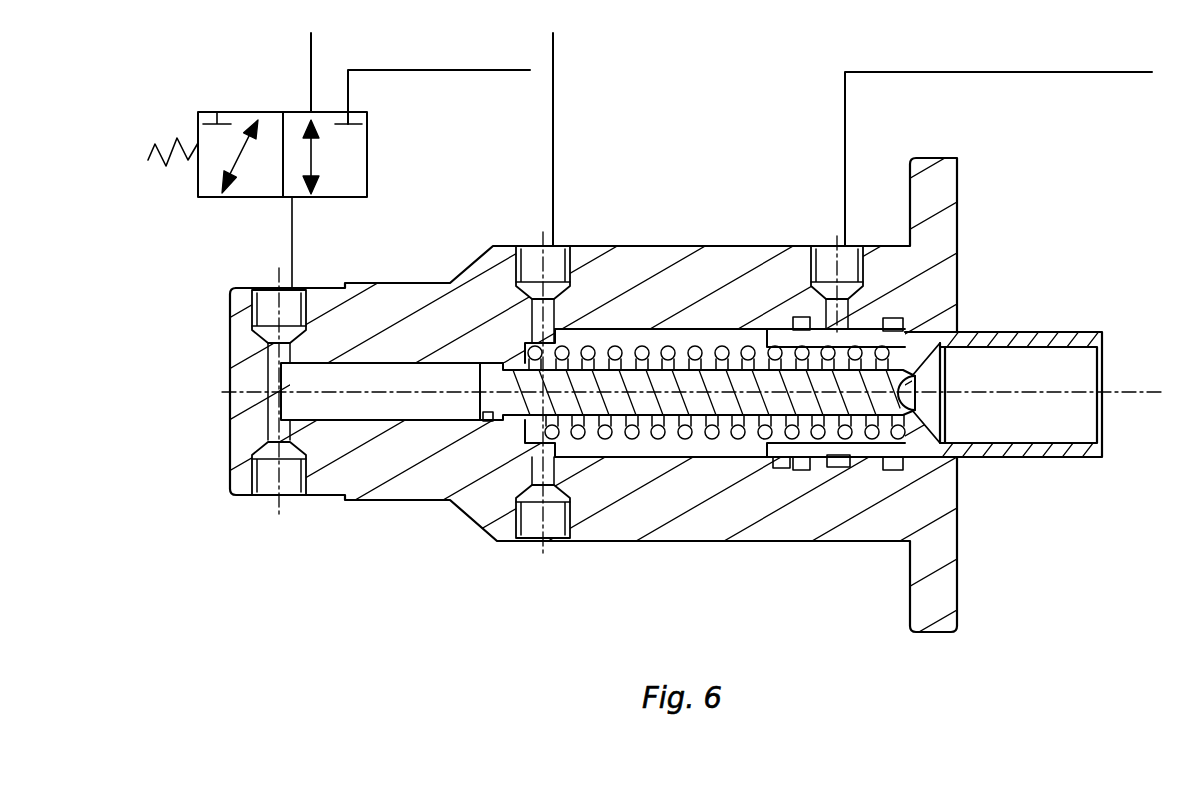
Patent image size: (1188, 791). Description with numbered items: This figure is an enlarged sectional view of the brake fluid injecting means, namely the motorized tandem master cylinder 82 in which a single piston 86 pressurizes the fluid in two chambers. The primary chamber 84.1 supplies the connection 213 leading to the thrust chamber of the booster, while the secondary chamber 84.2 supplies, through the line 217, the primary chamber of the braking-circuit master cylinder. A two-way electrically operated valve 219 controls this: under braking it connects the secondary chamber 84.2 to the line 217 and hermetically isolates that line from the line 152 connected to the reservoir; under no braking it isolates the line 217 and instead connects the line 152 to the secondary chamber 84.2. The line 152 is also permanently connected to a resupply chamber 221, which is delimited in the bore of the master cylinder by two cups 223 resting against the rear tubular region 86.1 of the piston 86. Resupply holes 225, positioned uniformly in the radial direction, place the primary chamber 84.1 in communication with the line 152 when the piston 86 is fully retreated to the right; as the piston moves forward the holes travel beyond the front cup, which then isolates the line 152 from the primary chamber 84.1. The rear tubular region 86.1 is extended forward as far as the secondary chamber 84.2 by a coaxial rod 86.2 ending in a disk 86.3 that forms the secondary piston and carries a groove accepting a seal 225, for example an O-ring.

The master cylinder 82 is at (695, 218).
The piston 86 is at (1045, 332).
The primary chamber 84.1 is at (700, 443).
The secondary chamber 84.2 is at (417, 389).
The rear tubular region 86.1 is at (885, 470).
The coaxial rod 86.2 is at (613, 455).
The disk 86.3 is at (487, 425).
The line connected to the reservoir 152 is at (425, 72).
The connection of the thrust chamber 213 is at (556, 44).
The line 217 is at (311, 47).
The two-way electrically operated valve 219 is at (367, 172).
The resupply chamber 221 is at (838, 468).
The cups 223 is at (800, 470).
The resupply holes 225 is at (490, 418).